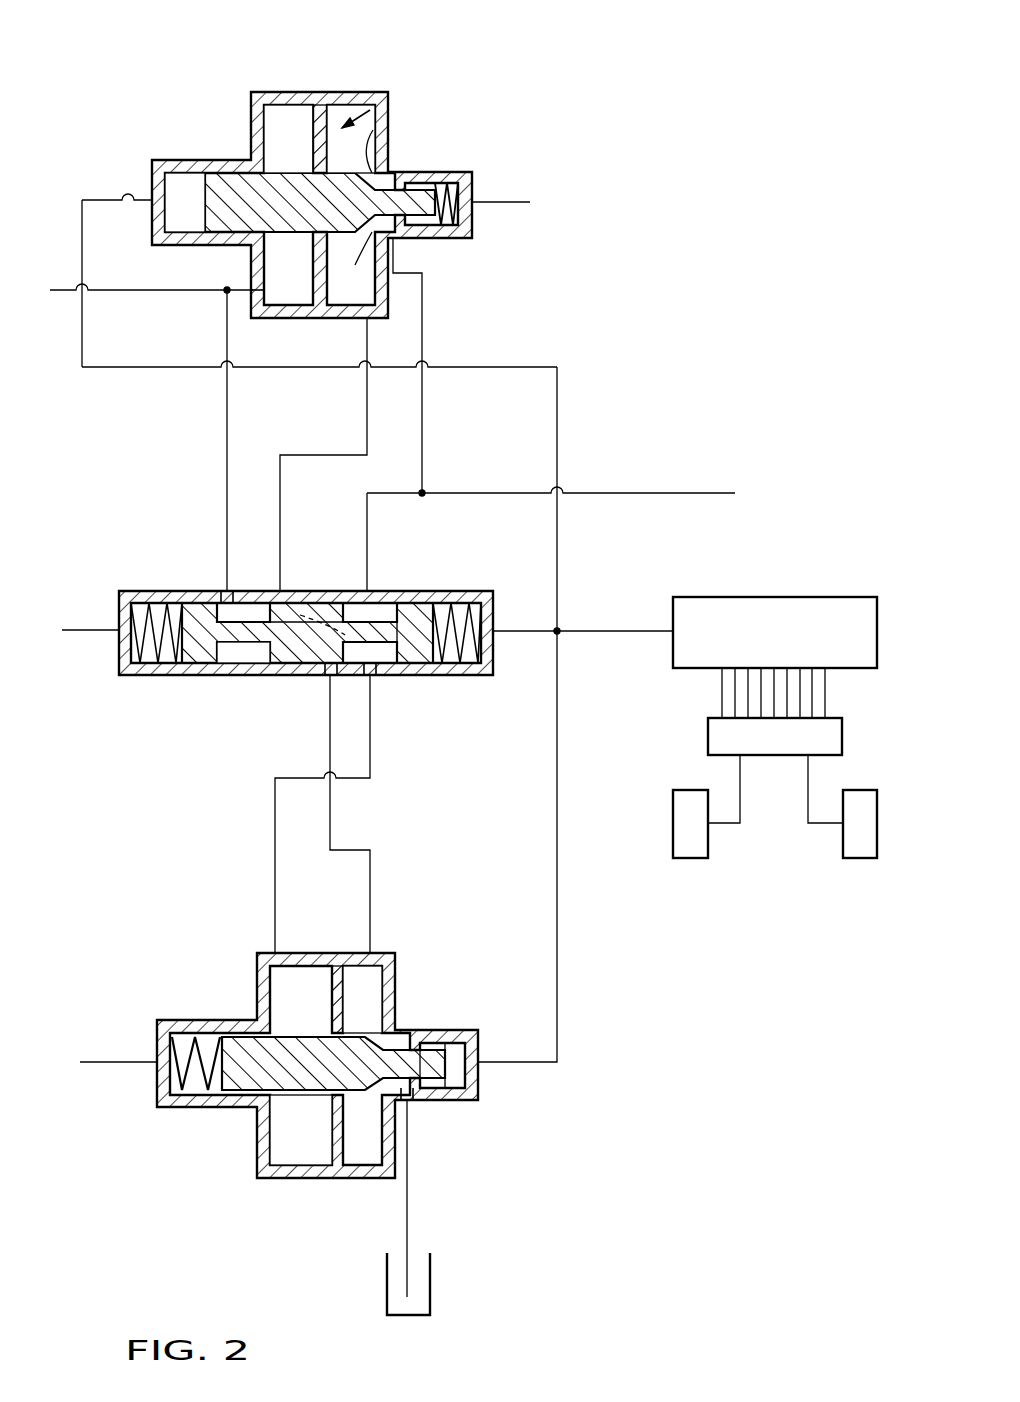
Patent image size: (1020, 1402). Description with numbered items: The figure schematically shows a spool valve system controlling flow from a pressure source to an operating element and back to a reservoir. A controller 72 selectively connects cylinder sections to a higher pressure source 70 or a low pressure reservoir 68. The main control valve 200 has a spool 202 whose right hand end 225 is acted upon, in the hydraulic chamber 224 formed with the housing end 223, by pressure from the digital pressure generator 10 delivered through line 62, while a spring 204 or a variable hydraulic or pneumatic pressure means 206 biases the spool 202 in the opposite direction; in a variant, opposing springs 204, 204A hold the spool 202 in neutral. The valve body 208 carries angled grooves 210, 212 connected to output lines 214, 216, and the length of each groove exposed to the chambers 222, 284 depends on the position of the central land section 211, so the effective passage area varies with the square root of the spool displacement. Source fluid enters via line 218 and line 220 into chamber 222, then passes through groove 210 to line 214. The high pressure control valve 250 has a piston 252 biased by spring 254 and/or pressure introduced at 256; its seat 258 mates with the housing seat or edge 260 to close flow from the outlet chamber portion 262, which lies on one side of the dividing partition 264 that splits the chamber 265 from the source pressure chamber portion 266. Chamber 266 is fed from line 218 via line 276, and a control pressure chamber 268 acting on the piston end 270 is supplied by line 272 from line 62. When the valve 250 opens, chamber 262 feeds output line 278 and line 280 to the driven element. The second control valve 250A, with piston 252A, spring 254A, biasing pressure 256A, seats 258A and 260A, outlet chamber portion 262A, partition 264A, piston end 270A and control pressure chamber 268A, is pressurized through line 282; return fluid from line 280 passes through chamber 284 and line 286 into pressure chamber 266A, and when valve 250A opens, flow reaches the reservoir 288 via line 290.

The digital pressure generator 10 is at (795, 597).
The line 62 is at (632, 631).
The reservoir 68 is at (673, 836).
The higher pressure source 70 is at (843, 848).
The controller 72 is at (708, 742).
The main control valve 200 is at (405, 591).
The spool 202 is at (435, 665).
The spring 204 is at (148, 603).
The opposing spring 204A is at (460, 591).
The variable hydraulic or pneumatic pressure means 206 is at (90, 630).
The valve body 208 is at (312, 600).
The groove 210 is at (270, 598).
The central land section 211 is at (338, 600).
The groove 212 is at (320, 670).
The output line 214 is at (318, 455).
The output line 216 is at (330, 812).
The line 218 is at (150, 292).
The line 220 is at (227, 405).
The chamber 222 is at (235, 655).
The end of the housing 223 is at (481, 635).
The hydraulic chamber 224 is at (470, 675).
The right hand end of the spool 225 is at (425, 650).
The high pressure control valve 250 is at (388, 120).
The second control valve 250A is at (392, 960).
The piston 252 is at (235, 190).
The piston 252A is at (240, 1045).
The spring 254 is at (448, 238).
The spring 254A is at (195, 1108).
The hydraulic or pneumatic pressure 256 is at (488, 202).
The biasing pressure 256A is at (125, 1062).
The seat 258 is at (392, 172).
The seat 258A is at (410, 1110).
The seat or edge 260 is at (378, 140).
The seat or edge 260A is at (395, 1040).
The outlet chamber portion 262 is at (388, 100).
The outlet chamber portion 262A is at (360, 985).
The dividing partition 264 is at (313, 105).
The dividing partition 264A is at (335, 968).
The chamber 265 is at (372, 108).
The source pressure chamber portion 266 is at (292, 115).
The pressure chamber 266A is at (302, 1140).
The control pressure chamber 268 is at (185, 188).
The control pressure chamber 268A is at (460, 1073).
The end of the piston 270 is at (200, 245).
The end of the piston 270A is at (465, 1058).
The line 272 is at (505, 367).
The line 276 is at (244, 290).
The output line 278 is at (422, 412).
The line 280 is at (655, 493).
The line 282 is at (557, 782).
The chamber 284 is at (378, 672).
The line 286 is at (275, 808).
The reservoir 288 is at (430, 1283).
The line 290 is at (407, 1200).